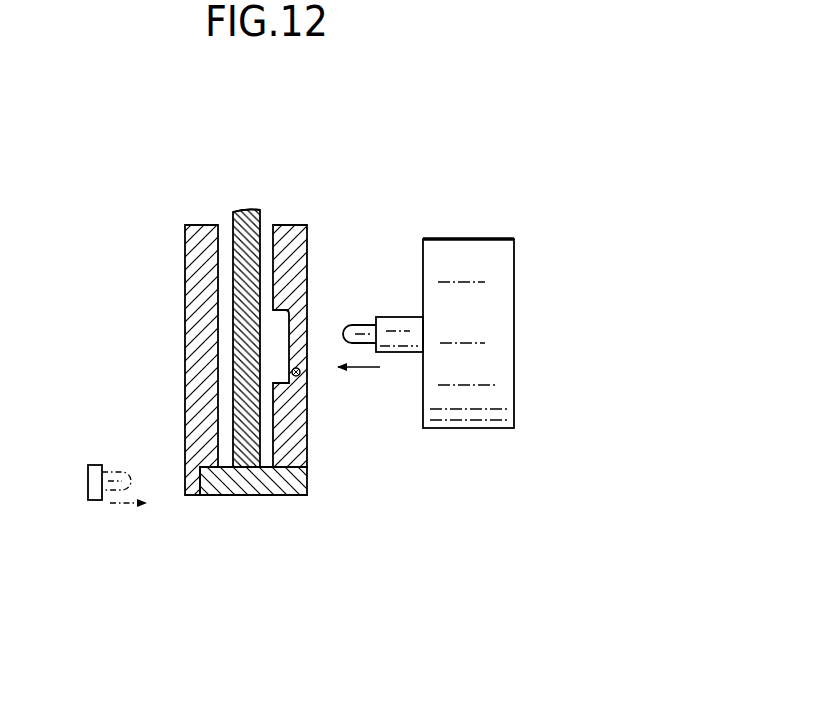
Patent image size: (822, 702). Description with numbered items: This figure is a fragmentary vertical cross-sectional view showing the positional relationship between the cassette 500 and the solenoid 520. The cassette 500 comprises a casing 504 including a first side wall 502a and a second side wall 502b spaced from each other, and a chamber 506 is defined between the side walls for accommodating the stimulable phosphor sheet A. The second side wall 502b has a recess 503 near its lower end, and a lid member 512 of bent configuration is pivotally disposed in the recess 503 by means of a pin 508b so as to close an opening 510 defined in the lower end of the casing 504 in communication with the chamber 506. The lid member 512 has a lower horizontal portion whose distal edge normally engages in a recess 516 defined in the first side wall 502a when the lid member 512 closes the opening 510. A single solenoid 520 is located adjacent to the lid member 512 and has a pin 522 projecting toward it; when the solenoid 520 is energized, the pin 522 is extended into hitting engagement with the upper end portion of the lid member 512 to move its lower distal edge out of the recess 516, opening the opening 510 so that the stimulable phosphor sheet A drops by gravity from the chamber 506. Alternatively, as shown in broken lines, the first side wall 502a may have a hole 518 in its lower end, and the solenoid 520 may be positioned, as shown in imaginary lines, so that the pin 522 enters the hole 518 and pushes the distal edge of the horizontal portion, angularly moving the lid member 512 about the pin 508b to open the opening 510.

The cassette 500 is at (176, 221).
The first side wall 502a is at (205, 248).
The second side wall 502b is at (312, 240).
The recess 503 is at (283, 338).
The casing 504 is at (183, 298).
The chamber 506 is at (265, 232).
The pin 508b is at (304, 375).
The opening 510 is at (223, 460).
The lid member 512 is at (292, 482).
The recess 516 is at (203, 465).
The hole 518 is at (193, 498).
The solenoid 520 is at (486, 257).
The pin 522 is at (363, 330).
The stimulable phosphor sheet A is at (243, 216).